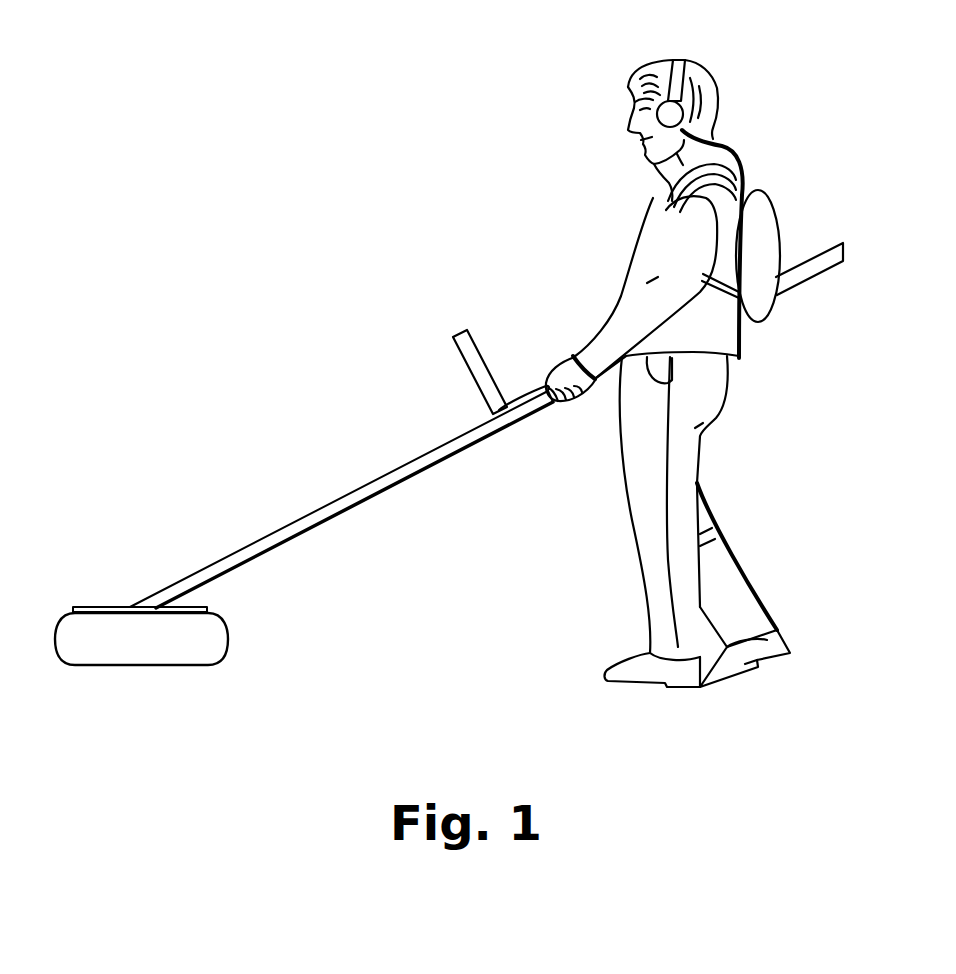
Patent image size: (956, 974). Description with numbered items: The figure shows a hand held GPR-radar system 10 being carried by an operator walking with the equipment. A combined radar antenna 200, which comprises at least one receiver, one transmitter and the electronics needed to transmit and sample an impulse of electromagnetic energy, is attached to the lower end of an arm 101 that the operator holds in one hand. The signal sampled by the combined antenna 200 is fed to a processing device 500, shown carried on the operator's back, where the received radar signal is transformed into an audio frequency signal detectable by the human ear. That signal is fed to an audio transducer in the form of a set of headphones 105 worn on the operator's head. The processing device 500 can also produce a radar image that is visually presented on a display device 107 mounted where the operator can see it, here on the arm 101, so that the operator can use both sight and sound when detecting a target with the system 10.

The hand held GPR-radar system 10 is at (292, 407).
The arm 101 is at (276, 530).
The set of headphones 105 is at (681, 58).
The display device 107 is at (458, 331).
The combined radar antenna 200 is at (66, 617).
The processing device 500 is at (769, 206).